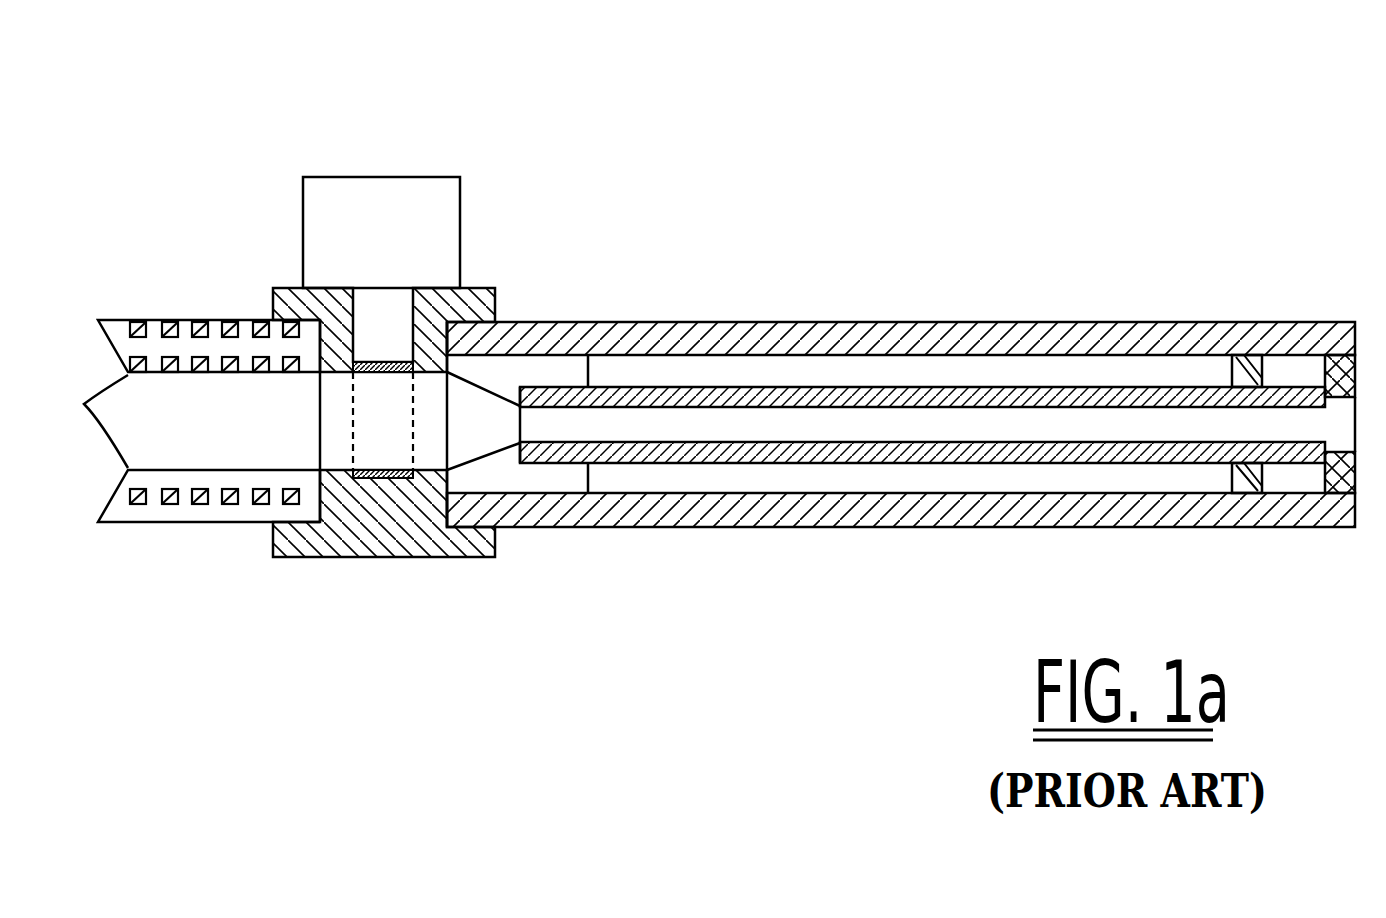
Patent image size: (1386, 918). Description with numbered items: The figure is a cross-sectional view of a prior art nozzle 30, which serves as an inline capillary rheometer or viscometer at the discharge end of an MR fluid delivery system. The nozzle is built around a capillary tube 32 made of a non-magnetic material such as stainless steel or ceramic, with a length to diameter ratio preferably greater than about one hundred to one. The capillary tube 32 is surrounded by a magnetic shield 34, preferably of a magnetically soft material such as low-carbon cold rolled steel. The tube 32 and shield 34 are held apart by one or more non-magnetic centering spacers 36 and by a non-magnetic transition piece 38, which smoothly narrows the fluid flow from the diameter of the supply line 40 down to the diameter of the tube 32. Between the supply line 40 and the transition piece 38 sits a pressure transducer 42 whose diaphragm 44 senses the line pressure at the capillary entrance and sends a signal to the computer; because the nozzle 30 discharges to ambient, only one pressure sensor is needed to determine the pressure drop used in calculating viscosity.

The prior art nozzle 30 is at (866, 228).
The capillary tube 32 is at (738, 387).
The magnetic shield 34 is at (830, 521).
The non-magnetic centering spacers 36 is at (1262, 497).
The non-magnetic transition piece 38 is at (517, 378).
The supply line 40 is at (223, 493).
The pressure transducer 42 is at (412, 177).
The diaphragm 44 is at (382, 376).